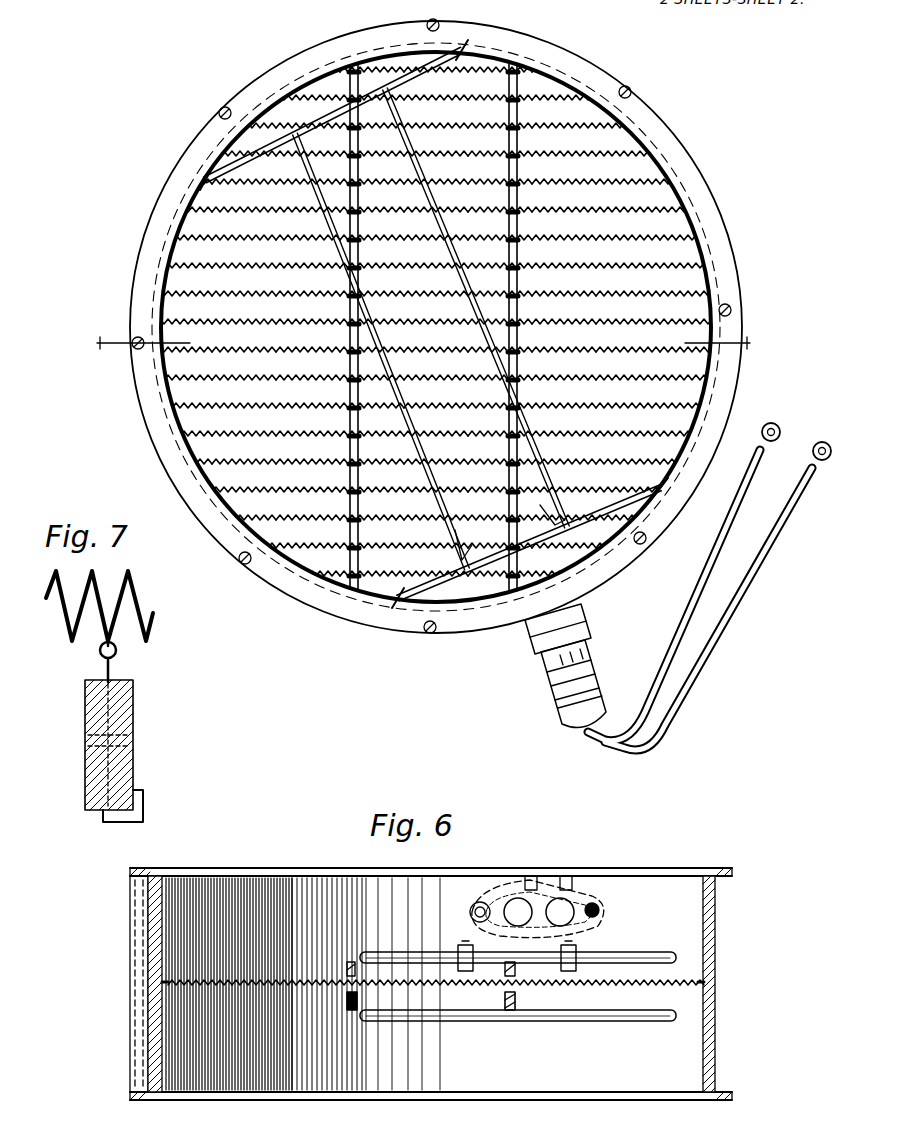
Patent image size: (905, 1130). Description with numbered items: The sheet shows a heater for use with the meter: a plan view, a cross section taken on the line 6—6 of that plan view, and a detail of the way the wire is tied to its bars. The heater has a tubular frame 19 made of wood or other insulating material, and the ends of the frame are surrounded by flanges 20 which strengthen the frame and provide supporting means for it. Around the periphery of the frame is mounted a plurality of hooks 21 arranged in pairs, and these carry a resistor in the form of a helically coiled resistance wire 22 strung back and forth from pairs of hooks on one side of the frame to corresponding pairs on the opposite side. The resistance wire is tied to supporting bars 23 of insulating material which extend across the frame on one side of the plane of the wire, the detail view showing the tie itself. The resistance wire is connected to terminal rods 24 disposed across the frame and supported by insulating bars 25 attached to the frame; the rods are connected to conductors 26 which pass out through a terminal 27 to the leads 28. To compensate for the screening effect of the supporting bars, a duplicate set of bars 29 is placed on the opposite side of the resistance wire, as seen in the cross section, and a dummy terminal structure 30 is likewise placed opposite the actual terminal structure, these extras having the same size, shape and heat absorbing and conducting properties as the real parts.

In FIG. 6, the tubular frame 19 is at (716, 920).
In FIG. 5, the flanges 20 is at (712, 232).
In FIG. 6, the flanges 20 is at (711, 870).
In FIG. 5, the hooks 21 is at (620, 204).
In FIG. 6, the hooks 21 is at (162, 984).
In FIG. 5, the resistance wire 22 is at (613, 182).
In FIG. 7, the resistance wire 22 is at (62, 630).
In FIG. 6, the resistance wire 22 is at (272, 984).
In FIG. 5, the supporting bars 23 is at (520, 197).
In FIG. 7, the supporting bars 23 is at (123, 716).
In FIG. 6, the supporting bars 23 is at (353, 1010).
In FIG. 5, the terminal rods 24 is at (362, 290).
In FIG. 6, the terminal rods 24 is at (394, 960).
In FIG. 5, the insulating bars 25 is at (258, 148).
In FIG. 5, the conductors 26 is at (512, 483).
In FIG. 5, the terminal 27 is at (527, 626).
In FIG. 5, the leads 28 is at (766, 528).
In FIG. 6, the duplicate set of bars 29 is at (350, 968).
In FIG. 6, the dummy terminal structure 30 is at (477, 1020).
In FIG. 5, the section line 6 is at (421, 344).